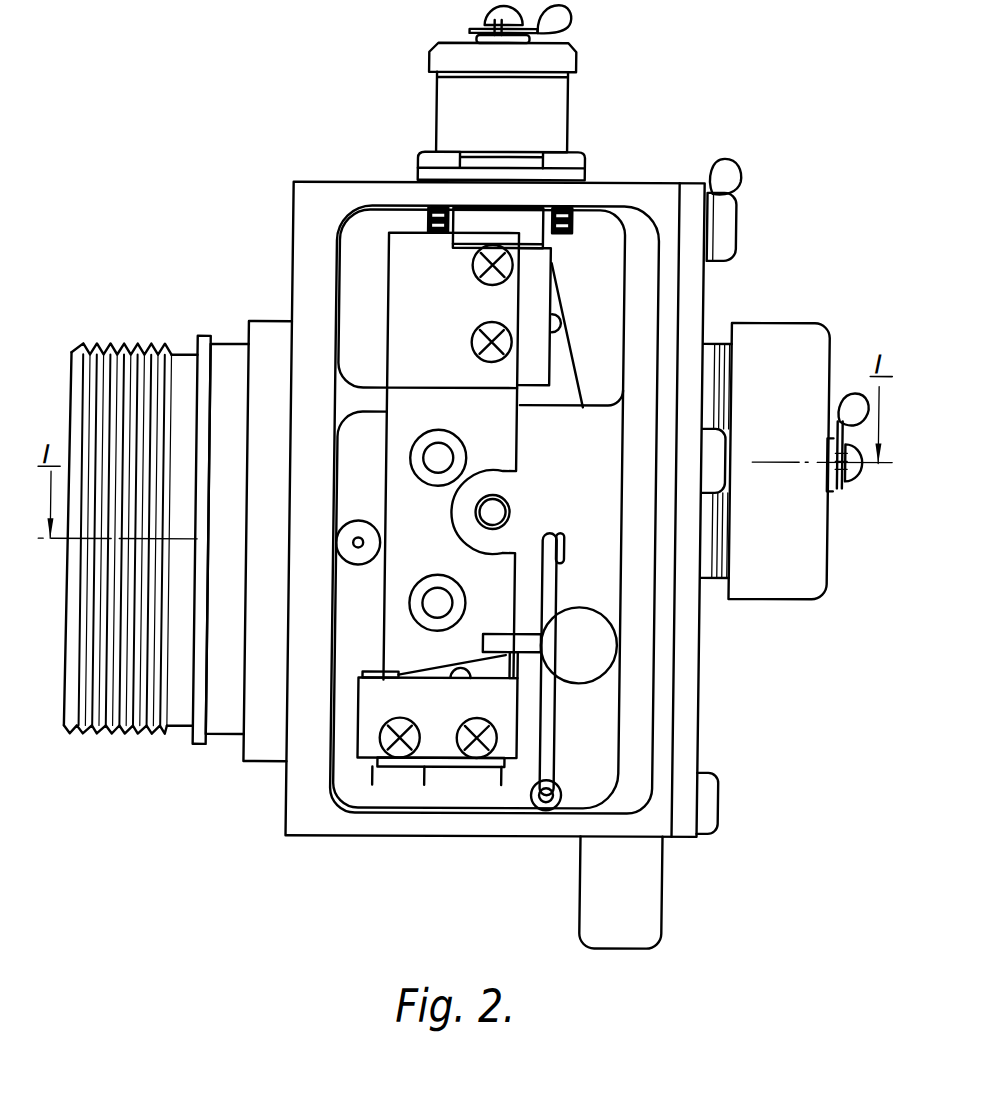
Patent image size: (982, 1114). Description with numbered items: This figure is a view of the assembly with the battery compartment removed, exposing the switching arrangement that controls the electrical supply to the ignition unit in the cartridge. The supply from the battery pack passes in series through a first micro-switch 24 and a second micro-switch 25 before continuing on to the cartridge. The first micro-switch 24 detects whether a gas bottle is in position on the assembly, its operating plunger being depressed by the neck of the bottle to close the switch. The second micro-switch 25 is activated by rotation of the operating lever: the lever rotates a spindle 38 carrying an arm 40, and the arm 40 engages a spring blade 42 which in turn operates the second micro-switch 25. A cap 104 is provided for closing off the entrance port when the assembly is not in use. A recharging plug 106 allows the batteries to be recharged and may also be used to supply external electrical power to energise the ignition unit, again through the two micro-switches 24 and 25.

The recharging plug 106 is at (447, 118).
The first micro-switch 24 is at (534, 294).
The spring blade 42 is at (477, 657).
The arm 40 is at (520, 638).
The spindle 38 is at (580, 681).
The second micro-switch 25 is at (372, 742).
The cap 104 is at (780, 580).